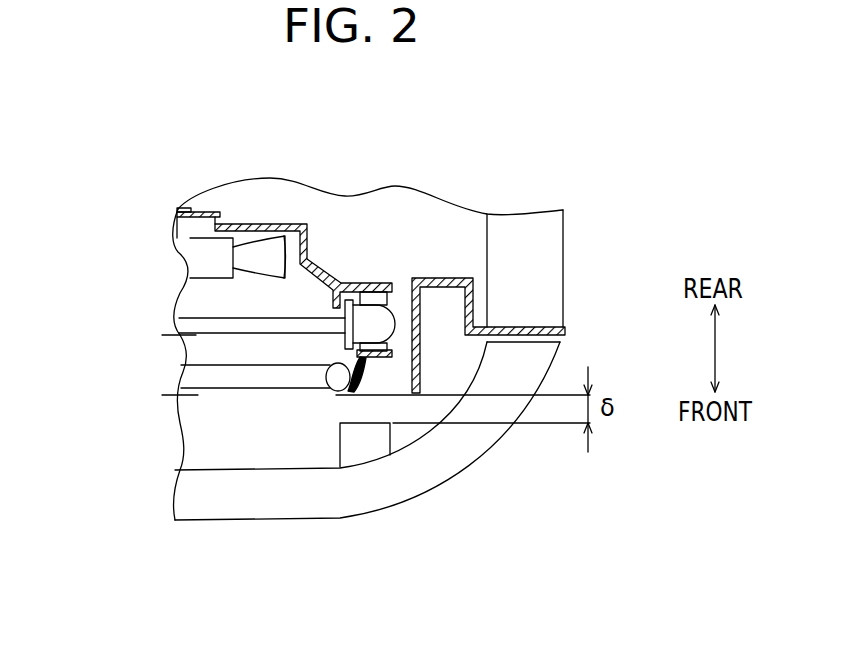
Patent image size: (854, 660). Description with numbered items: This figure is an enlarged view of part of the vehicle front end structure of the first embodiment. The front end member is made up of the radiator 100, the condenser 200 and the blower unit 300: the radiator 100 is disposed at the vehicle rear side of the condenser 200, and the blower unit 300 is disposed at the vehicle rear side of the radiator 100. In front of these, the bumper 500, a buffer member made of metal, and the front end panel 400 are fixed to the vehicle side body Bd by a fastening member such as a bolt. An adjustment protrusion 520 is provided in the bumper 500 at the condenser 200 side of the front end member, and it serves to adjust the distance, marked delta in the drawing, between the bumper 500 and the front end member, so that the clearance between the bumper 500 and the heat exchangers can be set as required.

The radiator 100 is at (203, 327).
The condenser 200 is at (203, 386).
The blower unit 300 is at (202, 228).
The front end panel 400 is at (440, 278).
The bumper 500 is at (442, 462).
The adjustment protrusion 520 is at (362, 452).
The vehicle side body Bd is at (545, 302).